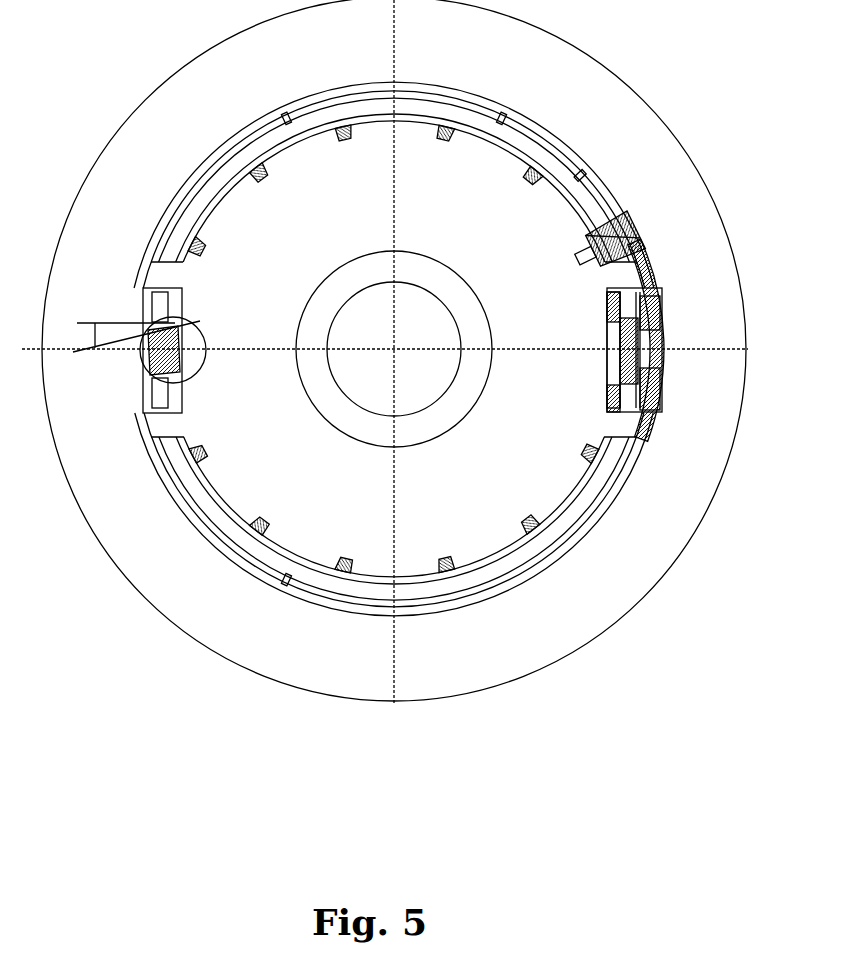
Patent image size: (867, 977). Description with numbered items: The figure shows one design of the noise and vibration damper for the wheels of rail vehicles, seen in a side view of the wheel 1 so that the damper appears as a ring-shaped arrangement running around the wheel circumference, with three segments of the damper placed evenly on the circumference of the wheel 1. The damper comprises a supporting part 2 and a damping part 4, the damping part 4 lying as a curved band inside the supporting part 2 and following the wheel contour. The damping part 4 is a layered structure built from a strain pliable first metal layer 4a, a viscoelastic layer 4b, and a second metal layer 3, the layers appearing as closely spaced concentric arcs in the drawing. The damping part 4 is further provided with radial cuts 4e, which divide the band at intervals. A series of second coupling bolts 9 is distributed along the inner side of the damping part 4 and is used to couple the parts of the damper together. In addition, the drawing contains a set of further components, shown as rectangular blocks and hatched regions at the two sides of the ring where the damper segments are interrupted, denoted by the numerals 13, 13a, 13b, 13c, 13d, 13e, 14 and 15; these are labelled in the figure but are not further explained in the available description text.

The wheel 1 is at (190, 112).
The supporting part 2 is at (163, 482).
The second metal layer 3 is at (210, 482).
The damping part 4 is at (608, 460).
The first metal layer 4a is at (543, 140).
The viscoelastic layer 4b is at (567, 183).
The radial cuts 4e is at (543, 140).
The second coupling bolts 9 is at (445, 563).
The pivot bearing assembly 13 is at (183, 326).
The bearing bush 13a is at (187, 362).
The bearing hub 13b is at (165, 348).
The bearing plates 13c is at (183, 349).
The lower bearing block 13d is at (617, 372).
The upper bearing block 13e is at (622, 327).
The locking unit 14 is at (634, 406).
The actuating strip 15 is at (651, 404).